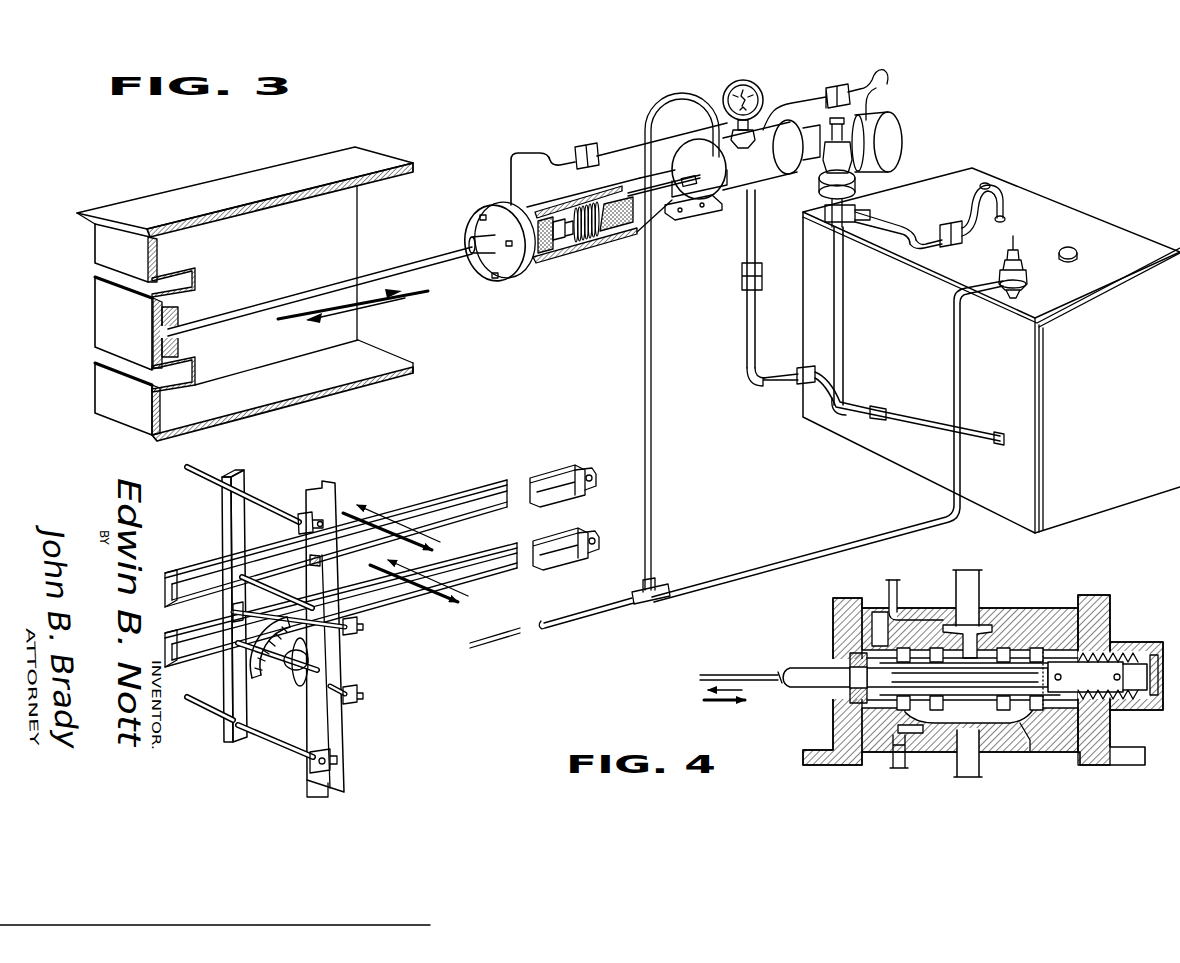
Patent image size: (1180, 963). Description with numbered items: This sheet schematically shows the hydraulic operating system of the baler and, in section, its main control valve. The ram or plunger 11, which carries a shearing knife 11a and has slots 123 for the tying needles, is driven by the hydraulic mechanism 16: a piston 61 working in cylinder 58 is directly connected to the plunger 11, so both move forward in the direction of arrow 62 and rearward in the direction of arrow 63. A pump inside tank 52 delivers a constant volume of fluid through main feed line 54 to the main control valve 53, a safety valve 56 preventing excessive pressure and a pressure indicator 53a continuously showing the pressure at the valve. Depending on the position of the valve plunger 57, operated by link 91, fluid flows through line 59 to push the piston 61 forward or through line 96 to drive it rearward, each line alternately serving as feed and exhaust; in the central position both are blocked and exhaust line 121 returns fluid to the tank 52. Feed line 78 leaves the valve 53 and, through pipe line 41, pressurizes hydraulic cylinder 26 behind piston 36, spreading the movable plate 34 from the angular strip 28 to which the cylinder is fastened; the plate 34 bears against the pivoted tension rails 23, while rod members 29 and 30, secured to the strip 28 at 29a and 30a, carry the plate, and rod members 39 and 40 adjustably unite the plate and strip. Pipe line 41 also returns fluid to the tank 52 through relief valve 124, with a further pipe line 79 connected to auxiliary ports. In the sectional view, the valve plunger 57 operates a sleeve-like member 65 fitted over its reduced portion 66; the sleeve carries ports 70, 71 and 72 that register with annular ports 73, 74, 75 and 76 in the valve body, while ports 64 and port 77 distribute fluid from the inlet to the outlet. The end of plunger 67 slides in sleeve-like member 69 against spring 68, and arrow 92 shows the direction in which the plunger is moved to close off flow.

In FIG. 3, the plunger 11 is at (227, 294).
In FIG. 3, the shearing knife 11a is at (105, 210).
In FIG. 3, the slots 123 is at (98, 246).
In FIG. 3, the hydraulic mechanism 16 is at (302, 292).
In FIG. 3, the arrow 62 is at (398, 302).
In FIG. 3, the arrow 63 is at (282, 322).
In FIG. 3, the piston 61 is at (590, 262).
In FIG. 3, the cylinder 58 is at (612, 246).
In FIG. 3, the valve plunger 57 is at (703, 216).
In FIG. 4, the valve plunger 57 is at (808, 666).
In FIG. 3, the link 91 is at (628, 193).
In FIG. 4, the link 91 is at (726, 674).
In FIG. 3, the main control valve 53 is at (777, 130).
In FIG. 4, the main control valve 53 is at (1028, 598).
In FIG. 3, the pressure indicator 53a is at (752, 82).
In FIG. 3, the safety valve 56 is at (806, 222).
In FIG. 3, the line 59 is at (818, 95).
In FIG. 3, the line 96 is at (612, 143).
In FIG. 4, the line 96 is at (969, 584).
In FIG. 3, the feed line 78 is at (705, 100).
In FIG. 4, the feed line 78 is at (894, 580).
In FIG. 3, the pipe line 79 is at (736, 250).
In FIG. 4, the pipe line 79 is at (892, 768).
In FIG. 3, the exhaust line 121 is at (750, 366).
In FIG. 3, the main feed line 54 is at (890, 222).
In FIG. 4, the main feed line 54 is at (984, 773).
In FIG. 3, the tank 52 is at (1040, 215).
In FIG. 3, the relief valve 124 is at (1030, 285).
In FIG. 3, the pipe line 41 is at (777, 563).
In FIG. 3, the arms 23 is at (453, 562).
In FIG. 3, the movable plate 34 is at (224, 520).
In FIG. 3, the angular strip 28 is at (335, 665).
In FIG. 3, the rod member 29 is at (210, 470).
In FIG. 3, the securing point 29a is at (345, 487).
In FIG. 3, the piston 36 is at (236, 650).
In FIG. 3, the rod member 39 is at (364, 628).
In FIG. 3, the rod member 40 is at (362, 700).
In FIG. 3, the hydraulic cylinder 26 is at (288, 676).
In FIG. 3, the rod member 30 is at (206, 712).
In FIG. 3, the securing point 30a is at (340, 760).
In FIG. 4, the reduced portion 66 is at (830, 722).
In FIG. 4, the port 70 is at (880, 608).
In FIG. 4, the port 77 is at (1010, 596).
In FIG. 4, the ports 64 is at (945, 748).
In FIG. 4, the port 71 is at (1005, 614).
In FIG. 4, the annular port 73 is at (905, 645).
In FIG. 4, the annular port 74 is at (937, 647).
In FIG. 4, the annular port 75 is at (1040, 612).
In FIG. 4, the sleeve-like member 65 is at (845, 640).
In FIG. 4, the arrow 92 is at (725, 702).
In FIG. 4, the end of plunger 67 is at (1122, 658).
In FIG. 4, the sleeve-like member 69 is at (1160, 655).
In FIG. 4, the spring 68 is at (1125, 712).
In FIG. 4, the port 72 is at (1090, 612).
In FIG. 4, the annular port 76 is at (1075, 606).